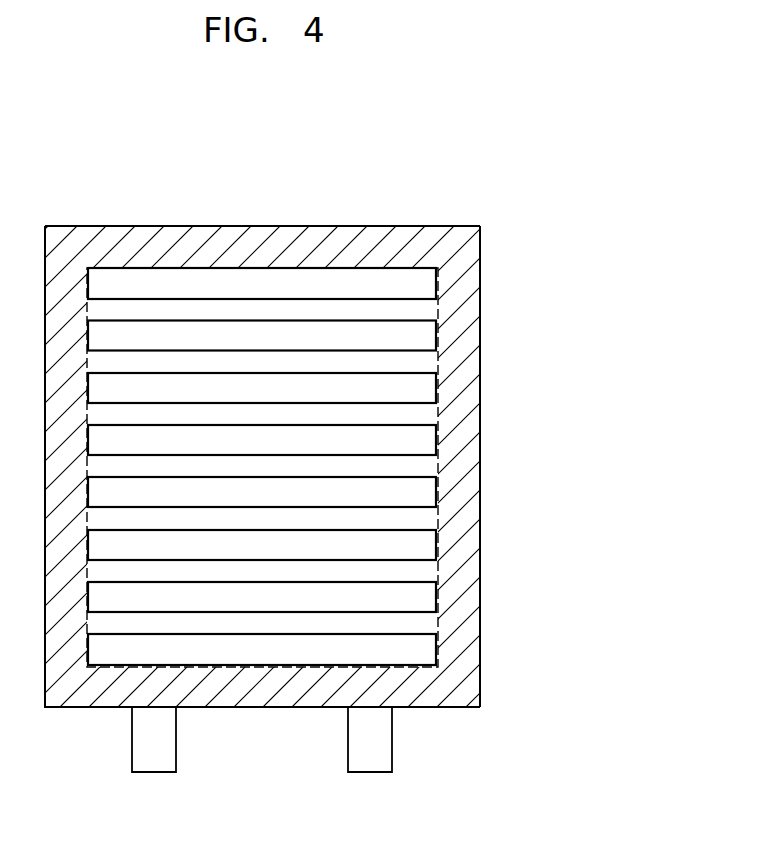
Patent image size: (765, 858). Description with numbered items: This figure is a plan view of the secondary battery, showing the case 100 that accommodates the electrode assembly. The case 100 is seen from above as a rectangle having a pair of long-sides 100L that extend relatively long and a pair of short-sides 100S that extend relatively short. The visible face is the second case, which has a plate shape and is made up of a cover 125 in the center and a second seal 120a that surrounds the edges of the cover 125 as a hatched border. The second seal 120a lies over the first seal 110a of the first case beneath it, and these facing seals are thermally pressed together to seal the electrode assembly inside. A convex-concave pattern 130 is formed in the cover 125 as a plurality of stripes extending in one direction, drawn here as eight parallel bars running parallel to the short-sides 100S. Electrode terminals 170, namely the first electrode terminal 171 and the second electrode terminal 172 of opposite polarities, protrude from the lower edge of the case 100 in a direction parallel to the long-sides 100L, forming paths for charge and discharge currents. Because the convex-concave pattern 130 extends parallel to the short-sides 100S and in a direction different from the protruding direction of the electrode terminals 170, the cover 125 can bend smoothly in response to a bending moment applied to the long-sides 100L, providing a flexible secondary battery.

The case 100 is at (500, 197).
The short-sides 100S is at (263, 226).
The long-sides 100L is at (480, 467).
The second seal 120a is at (382, 431).
The first seal 110a is at (382, 431).
The cover 125 is at (346, 268).
The convex-concave pattern 130 is at (130, 277).
The electrode terminals 170 is at (260, 782).
The first electrode terminal 171 is at (152, 770).
The second electrode terminal 172 is at (368, 770).